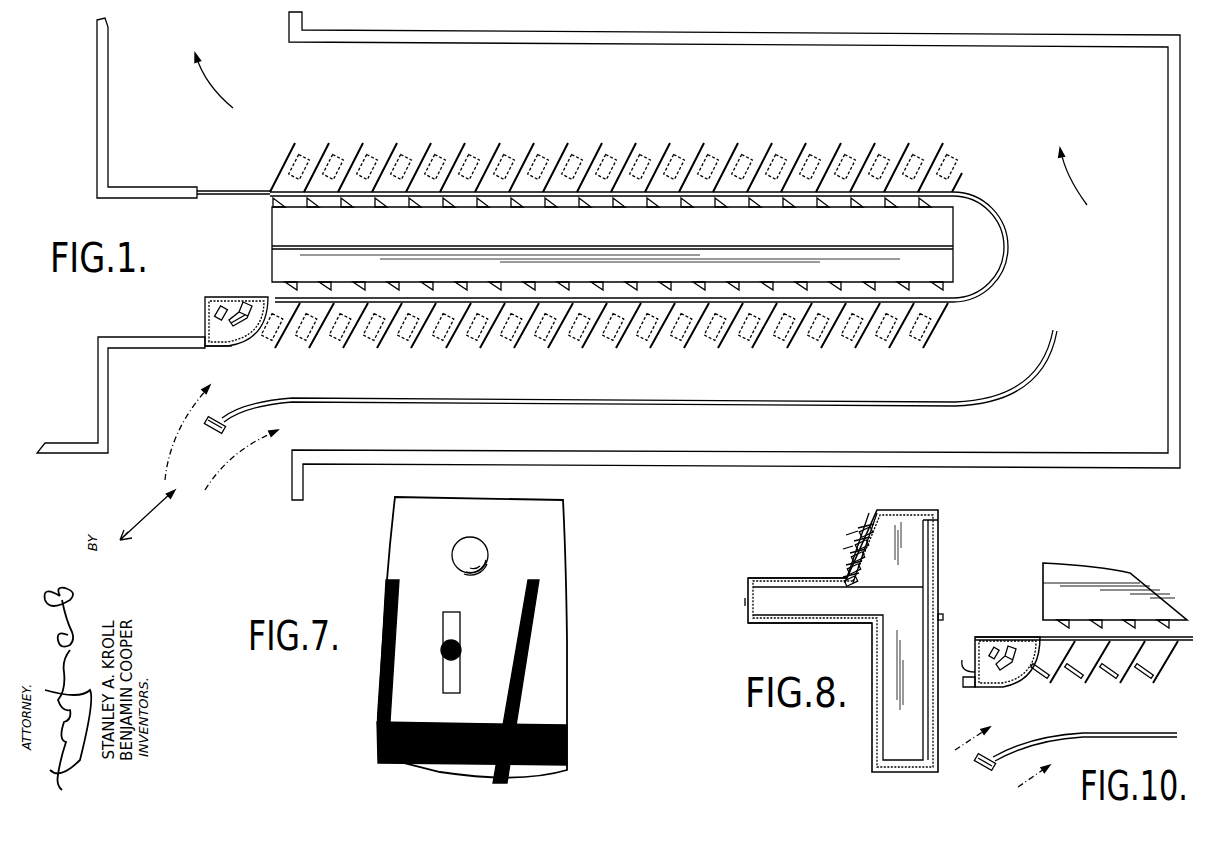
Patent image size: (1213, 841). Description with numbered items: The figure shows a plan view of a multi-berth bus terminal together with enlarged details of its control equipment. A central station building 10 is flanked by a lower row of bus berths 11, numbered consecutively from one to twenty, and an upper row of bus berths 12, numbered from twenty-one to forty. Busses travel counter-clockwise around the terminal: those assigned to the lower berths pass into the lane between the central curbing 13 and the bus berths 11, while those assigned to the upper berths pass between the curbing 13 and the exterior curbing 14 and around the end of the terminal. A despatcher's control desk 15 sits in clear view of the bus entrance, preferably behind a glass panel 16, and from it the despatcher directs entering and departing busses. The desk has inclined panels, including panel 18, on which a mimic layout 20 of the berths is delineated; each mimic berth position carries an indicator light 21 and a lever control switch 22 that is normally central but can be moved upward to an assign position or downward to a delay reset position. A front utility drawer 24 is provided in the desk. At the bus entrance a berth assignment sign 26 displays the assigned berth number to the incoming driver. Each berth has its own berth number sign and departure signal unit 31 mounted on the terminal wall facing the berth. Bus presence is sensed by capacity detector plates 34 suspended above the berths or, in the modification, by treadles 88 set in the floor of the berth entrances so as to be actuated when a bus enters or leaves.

In FIG. 1, the central station building 10 is at (618, 233).
In FIG. 10, the central station building 10 is at (1073, 563).
In FIG. 1, the bus berths 11 is at (478, 367).
In FIG. 10, the bus berths 11 is at (1102, 667).
In FIG. 1, the bus berths 12 is at (636, 112).
In FIG. 1, the curbing 13 is at (528, 404).
In FIG. 10, the curbing 13 is at (1078, 733).
In FIG. 1, the exterior curbing 14 is at (841, 43).
In FIG. 1, the despatcher's control desk 15 is at (218, 333).
In FIG. 8, the despatcher's control desk 15 is at (954, 556).
In FIG. 10, the despatcher's control desk 15 is at (1002, 645).
In FIG. 1, the glass panel 16 is at (220, 348).
In FIG. 7, the enclined panel 18 is at (472, 637).
In FIG. 8, the enclined panel 18 is at (868, 512).
In FIG. 7, the mimic layout 20 is at (523, 670).
In FIG. 7, the indicator light 21 is at (490, 556).
In FIG. 8, the indicator light 21 is at (863, 529).
In FIG. 7, the lever control switch 22 is at (468, 647).
In FIG. 8, the lever control switch 22 is at (847, 548).
In FIG. 8, the front utility drawer 24 is at (746, 605).
In FIG. 1, the berth assignment sign 26 is at (224, 410).
In FIG. 10, the berth assignment sign 26 is at (990, 750).
In FIG. 1, the berth number sign and departure signal unit 31 is at (305, 203).
In FIG. 1, the capacity detector plates 34 is at (478, 152).
In FIG. 10, the treadles 88 is at (1078, 678).